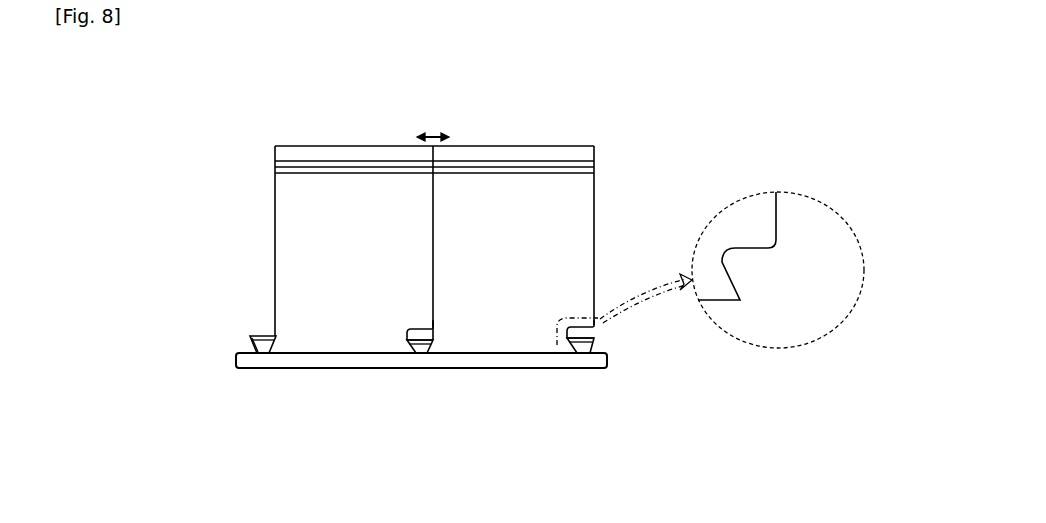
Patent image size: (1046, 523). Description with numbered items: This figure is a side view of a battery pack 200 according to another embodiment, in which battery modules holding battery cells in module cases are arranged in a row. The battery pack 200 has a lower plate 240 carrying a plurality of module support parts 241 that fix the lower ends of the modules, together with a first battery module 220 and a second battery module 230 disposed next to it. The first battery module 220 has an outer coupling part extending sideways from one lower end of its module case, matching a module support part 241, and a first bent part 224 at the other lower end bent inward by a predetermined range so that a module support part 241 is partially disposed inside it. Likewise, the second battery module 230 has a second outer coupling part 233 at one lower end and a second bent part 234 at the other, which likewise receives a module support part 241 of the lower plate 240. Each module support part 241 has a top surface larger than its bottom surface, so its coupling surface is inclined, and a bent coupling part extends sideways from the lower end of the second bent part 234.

The battery pack 200 is at (233, 115).
The first battery module 220 is at (278, 228).
The second battery module 230 is at (584, 229).
The first bent part 224 is at (404, 366).
The second outer coupling part 233 is at (438, 366).
The second bent part 234 is at (606, 358).
The lower plate 240 is at (545, 360).
The module support part 241 is at (252, 337).